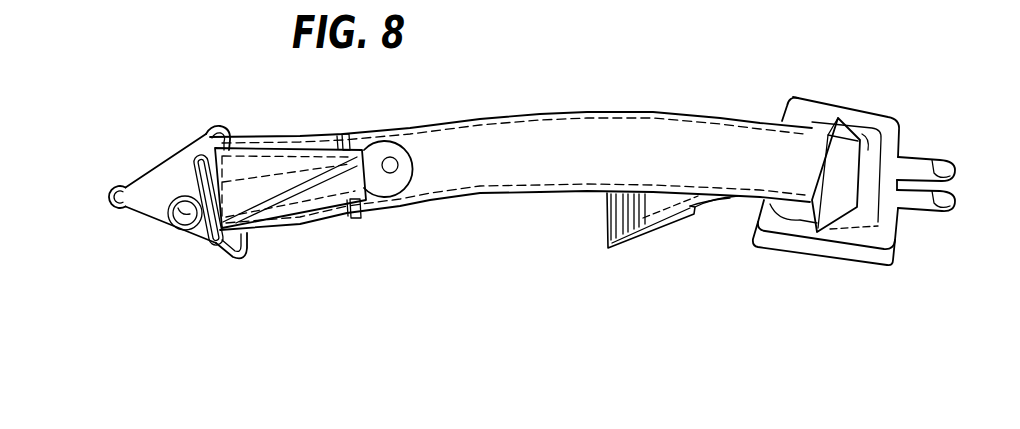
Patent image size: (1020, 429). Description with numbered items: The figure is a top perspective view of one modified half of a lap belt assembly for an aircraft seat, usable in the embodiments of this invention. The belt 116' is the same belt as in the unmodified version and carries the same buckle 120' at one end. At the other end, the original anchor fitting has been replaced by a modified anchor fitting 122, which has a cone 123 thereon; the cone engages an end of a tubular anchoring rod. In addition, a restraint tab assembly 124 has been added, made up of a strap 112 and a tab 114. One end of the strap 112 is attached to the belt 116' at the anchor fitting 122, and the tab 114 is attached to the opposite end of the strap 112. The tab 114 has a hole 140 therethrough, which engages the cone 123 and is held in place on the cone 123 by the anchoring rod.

The strap 112 is at (269, 198).
The tab 114 is at (378, 150).
The belt 116' is at (511, 159).
The buckle 120' is at (854, 200).
The anchor fitting 122 is at (229, 132).
The cone 123 is at (190, 220).
The restraint tab assembly 124 is at (360, 197).
The hole 140 is at (397, 168).